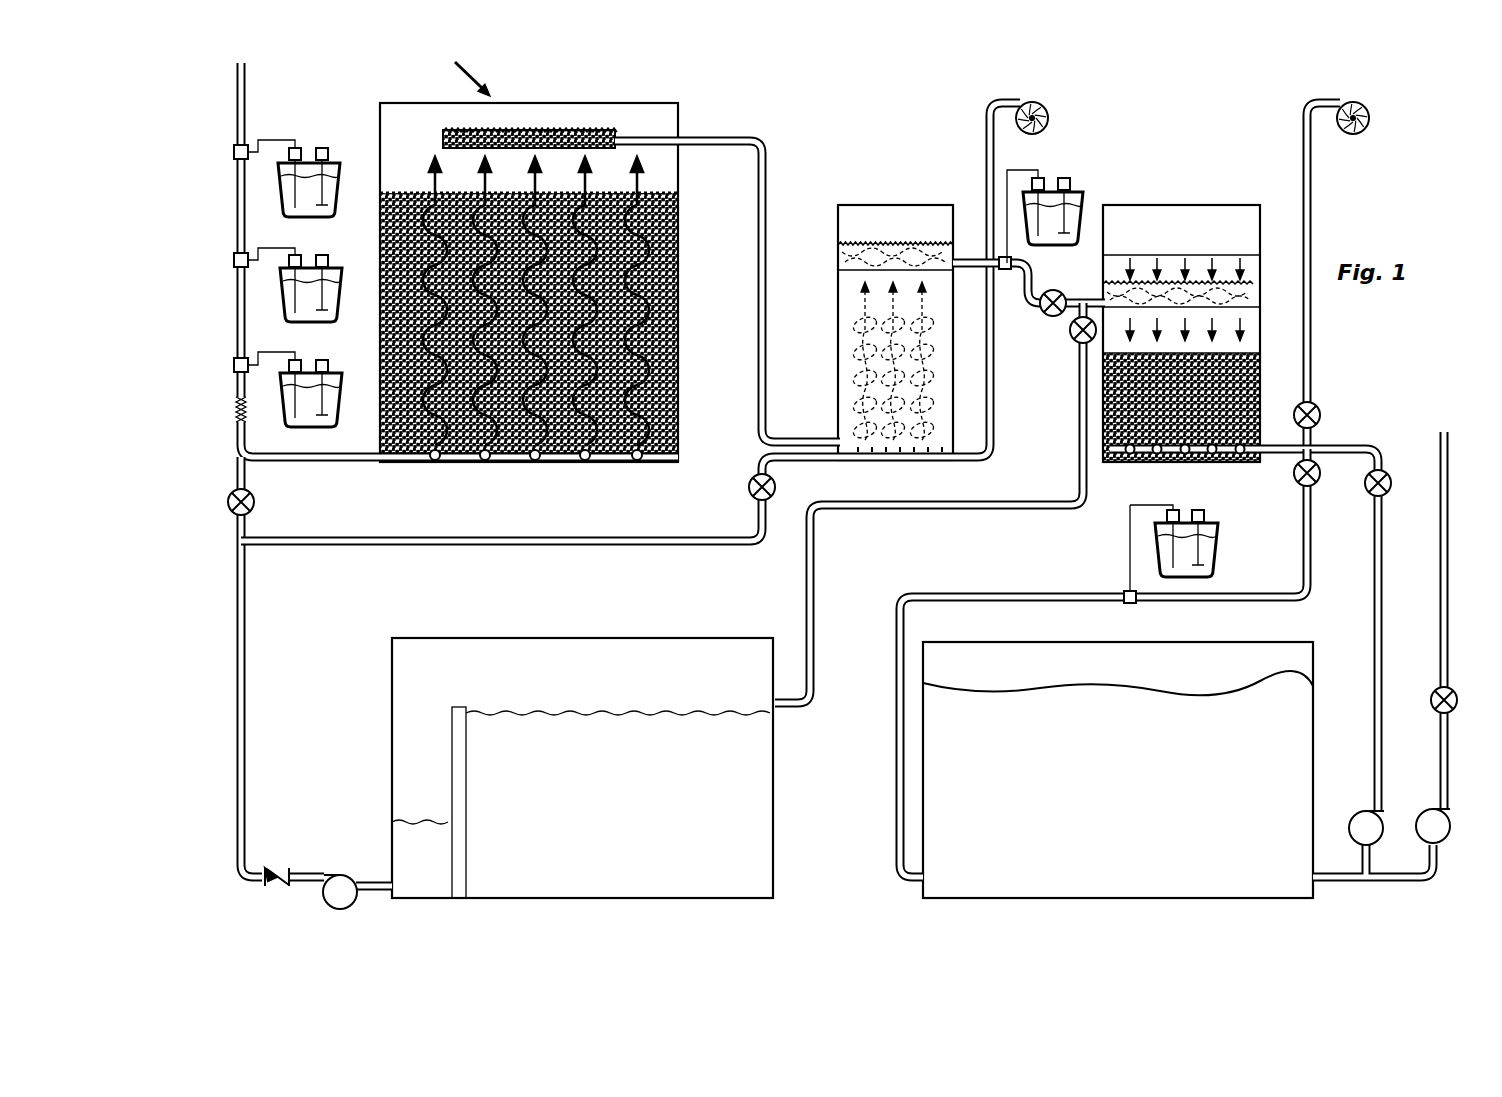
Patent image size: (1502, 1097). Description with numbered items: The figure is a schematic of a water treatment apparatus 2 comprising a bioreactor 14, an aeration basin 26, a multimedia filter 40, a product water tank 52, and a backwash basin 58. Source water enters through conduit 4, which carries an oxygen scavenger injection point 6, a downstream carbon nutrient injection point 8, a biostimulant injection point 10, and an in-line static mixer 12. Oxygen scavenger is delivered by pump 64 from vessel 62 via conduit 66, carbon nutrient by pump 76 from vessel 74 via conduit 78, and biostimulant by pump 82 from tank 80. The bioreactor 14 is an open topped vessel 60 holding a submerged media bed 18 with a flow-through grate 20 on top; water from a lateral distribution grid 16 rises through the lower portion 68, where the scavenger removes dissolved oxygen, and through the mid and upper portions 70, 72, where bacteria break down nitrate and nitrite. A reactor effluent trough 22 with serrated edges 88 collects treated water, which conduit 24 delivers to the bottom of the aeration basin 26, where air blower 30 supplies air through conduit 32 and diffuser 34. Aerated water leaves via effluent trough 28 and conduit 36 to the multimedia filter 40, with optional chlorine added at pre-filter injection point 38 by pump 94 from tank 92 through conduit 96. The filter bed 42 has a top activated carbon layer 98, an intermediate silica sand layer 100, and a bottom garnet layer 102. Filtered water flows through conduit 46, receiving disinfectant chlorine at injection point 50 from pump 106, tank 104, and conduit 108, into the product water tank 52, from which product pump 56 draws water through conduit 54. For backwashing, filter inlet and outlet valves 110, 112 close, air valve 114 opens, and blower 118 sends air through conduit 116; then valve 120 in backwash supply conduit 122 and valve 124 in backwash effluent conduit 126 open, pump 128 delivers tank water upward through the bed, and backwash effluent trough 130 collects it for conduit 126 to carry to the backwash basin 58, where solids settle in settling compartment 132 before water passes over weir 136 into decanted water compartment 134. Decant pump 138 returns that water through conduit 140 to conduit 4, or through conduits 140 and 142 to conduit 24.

The inventive apparatus 2 is at (461, 70).
The conduit 4 is at (235, 90).
The oxygen scavenger injection point 6 is at (233, 152).
The carbon nutrient injection point 8 is at (233, 261).
The biostimulant injection point 10 is at (233, 366).
The in-line static mixer 12 is at (235, 412).
The bioreactor 14 is at (650, 105).
The lateral distribution grid 16 is at (525, 465).
The media bed 18 is at (675, 265).
The flow-through grate 20 is at (672, 193).
The reactor effluent trough 22 is at (455, 128).
The conduit 24 is at (765, 140).
The aeration basin 26 is at (855, 290).
The effluent trough 28 is at (890, 240).
The air blower 30 is at (1048, 108).
The conduit 32 is at (1003, 390).
The air diffuser 34 is at (930, 462).
The conduit 36 is at (1028, 300).
The pre-filter chlorination injection point 38 is at (1000, 258).
The multimedia filter 40 is at (1158, 205).
The filter bed 42 is at (1262, 390).
The conduit 46 is at (1300, 505).
The chlorine injection point 50 is at (1125, 595).
The product water tank 52 is at (1115, 792).
The conduit 54 is at (1408, 880).
The product pump 56 is at (1448, 832).
The backwash basin 58 is at (610, 790).
The open topped vessel 60 is at (668, 115).
The vessel 62 is at (285, 215).
The pump 64 is at (300, 150).
The conduit 66 is at (272, 140).
The lower portion of reactor bed 68 is at (672, 395).
The mid portion of reactor bed 70 is at (670, 322).
The upper portion of reactor bed 72 is at (675, 220).
The vessel 74 is at (285, 322).
The pump 76 is at (300, 258).
The conduit 78 is at (262, 250).
The tank 80 is at (262, 355).
The pump 82 is at (300, 370).
The serrated upper side edges 88 is at (538, 128).
The tank 92 is at (1085, 205).
The pump 94 is at (1040, 185).
The conduit 96 is at (1025, 170).
The top layer 98 is at (1262, 366).
The intermediate layer 100 is at (1262, 396).
The bottom layer 102 is at (1322, 415).
The tank 104 is at (1218, 568).
The pump 106 is at (1178, 508).
The conduit 108 is at (1128, 545).
The filter inlet valve 110 is at (1062, 296).
The filter outlet valve 112 is at (1318, 490).
The air valve 114 is at (1320, 470).
The conduit 116 is at (1313, 226).
The air blower 118 is at (1368, 105).
The valve 120 is at (1385, 495).
The backwash supply water conduit 122 is at (1374, 630).
The valve 124 is at (1078, 340).
The backwash effluent conduit 126 is at (862, 512).
The pump 128 is at (1360, 815).
The backwash effluent trough 130 is at (1190, 290).
The settling compartment 132 is at (760, 780).
The decanted water compartment 134 is at (410, 745).
The weir 136 is at (462, 735).
The decant pump 138 is at (345, 882).
The conduit 140 is at (238, 668).
The conduit 142 is at (660, 548).